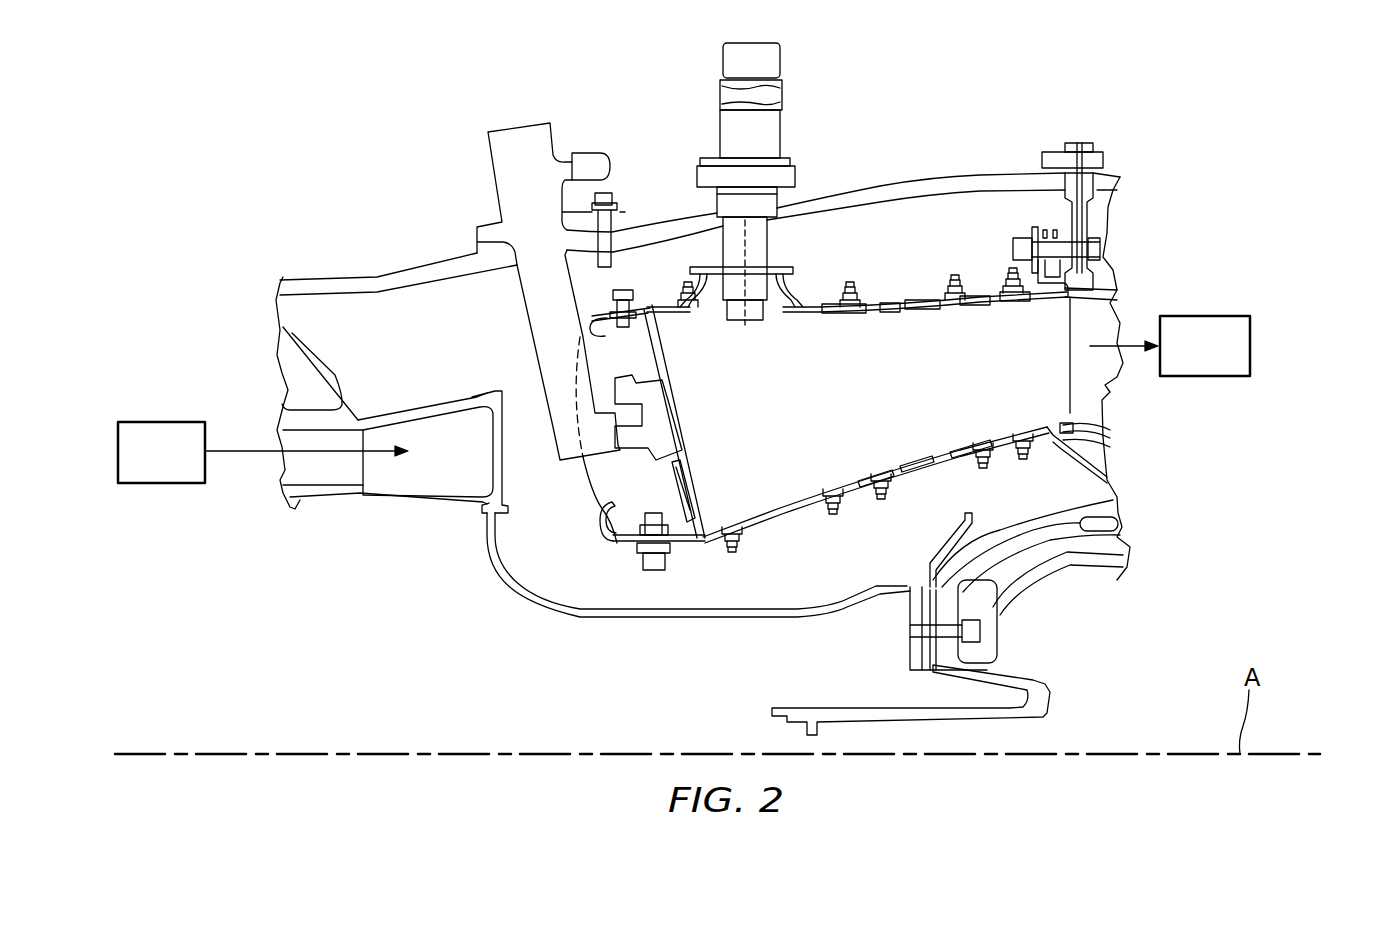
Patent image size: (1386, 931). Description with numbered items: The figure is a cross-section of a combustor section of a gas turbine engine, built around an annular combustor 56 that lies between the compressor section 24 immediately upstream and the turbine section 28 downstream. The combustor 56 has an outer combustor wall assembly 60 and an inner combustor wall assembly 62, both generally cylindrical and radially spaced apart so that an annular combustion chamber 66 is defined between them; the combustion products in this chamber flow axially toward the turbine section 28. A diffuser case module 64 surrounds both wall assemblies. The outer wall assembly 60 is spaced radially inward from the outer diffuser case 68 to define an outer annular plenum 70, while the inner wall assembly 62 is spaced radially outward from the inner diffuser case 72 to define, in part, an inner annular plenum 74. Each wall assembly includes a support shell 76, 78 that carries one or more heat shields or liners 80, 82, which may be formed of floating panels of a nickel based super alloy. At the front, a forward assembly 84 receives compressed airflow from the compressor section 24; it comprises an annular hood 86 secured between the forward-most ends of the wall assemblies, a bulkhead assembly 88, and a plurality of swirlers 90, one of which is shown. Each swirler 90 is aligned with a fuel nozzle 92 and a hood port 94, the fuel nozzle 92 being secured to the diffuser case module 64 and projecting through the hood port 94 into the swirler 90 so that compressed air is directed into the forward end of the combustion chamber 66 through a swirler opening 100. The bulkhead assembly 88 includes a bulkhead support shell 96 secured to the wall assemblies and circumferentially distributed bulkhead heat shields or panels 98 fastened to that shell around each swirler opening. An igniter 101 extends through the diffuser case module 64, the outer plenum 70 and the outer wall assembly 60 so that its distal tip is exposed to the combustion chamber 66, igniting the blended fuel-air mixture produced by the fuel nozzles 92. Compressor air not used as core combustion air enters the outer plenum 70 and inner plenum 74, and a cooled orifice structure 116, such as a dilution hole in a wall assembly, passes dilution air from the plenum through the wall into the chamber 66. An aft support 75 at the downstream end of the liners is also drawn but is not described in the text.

The compressor section 24 is at (263, 452).
The turbine section 28 is at (1170, 346).
The annular combustor 56 is at (998, 95).
The outer combustor wall assembly 60 is at (905, 292).
The inner combustor wall assembly 62 is at (857, 500).
The diffuser case module 64 is at (899, 178).
The annular combustion chamber 66 is at (882, 374).
The outer diffuser case 68 is at (835, 183).
The outer annular plenum 70 is at (835, 232).
The inner diffuser case 72 is at (727, 627).
The inner annular plenum 74 is at (810, 561).
The aft liner support 75 is at (1025, 458).
The support shell 76 is at (882, 305).
The support shell 78 is at (948, 465).
The liner 80 is at (783, 322).
The liner 82 is at (786, 500).
The forward assembly 84 is at (601, 557).
The annular hood 86 is at (605, 517).
The bulkhead assembly 88 is at (676, 367).
The swirler 90 is at (688, 462).
The fuel nozzle 92 is at (452, 291).
The hood port 94 is at (598, 498).
The bulkhead support shell 96 is at (613, 528).
The bulkhead heat shield 98 is at (682, 497).
The swirler opening 100 is at (683, 425).
The igniter 101 is at (741, 184).
The cooled orifice structure 116 is at (898, 309).